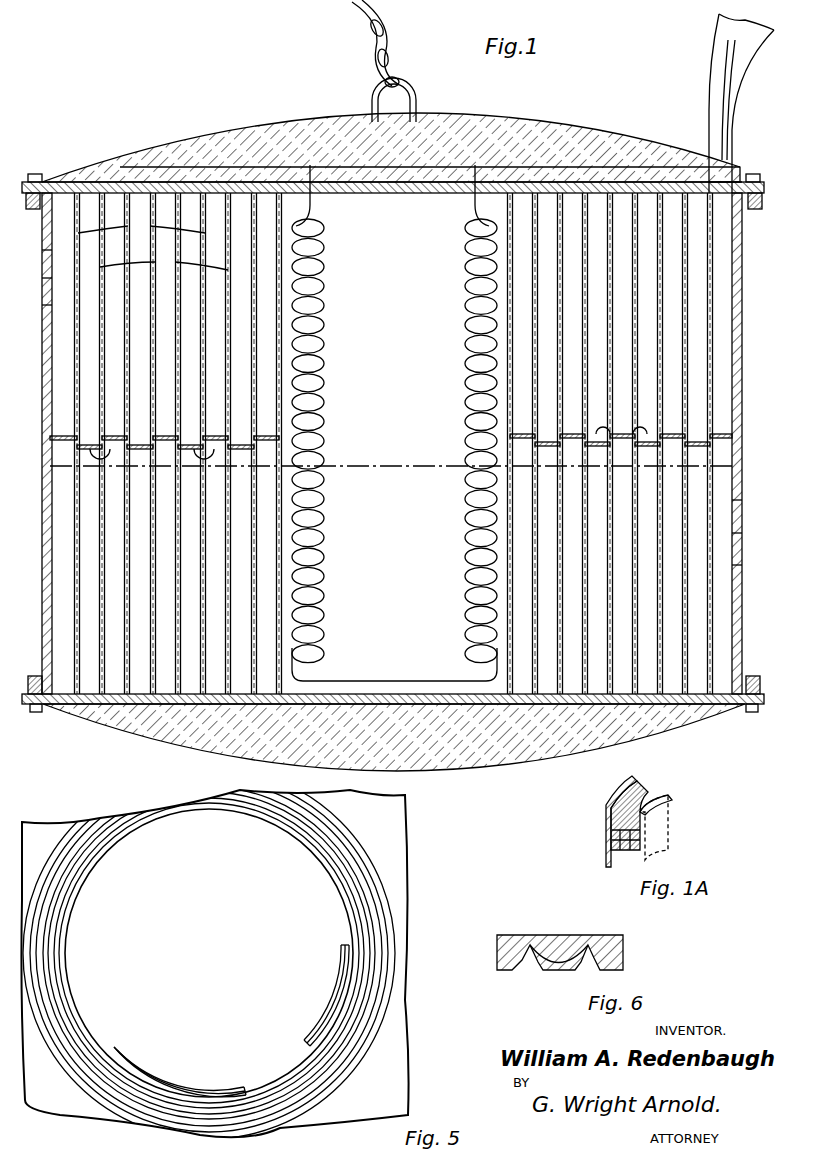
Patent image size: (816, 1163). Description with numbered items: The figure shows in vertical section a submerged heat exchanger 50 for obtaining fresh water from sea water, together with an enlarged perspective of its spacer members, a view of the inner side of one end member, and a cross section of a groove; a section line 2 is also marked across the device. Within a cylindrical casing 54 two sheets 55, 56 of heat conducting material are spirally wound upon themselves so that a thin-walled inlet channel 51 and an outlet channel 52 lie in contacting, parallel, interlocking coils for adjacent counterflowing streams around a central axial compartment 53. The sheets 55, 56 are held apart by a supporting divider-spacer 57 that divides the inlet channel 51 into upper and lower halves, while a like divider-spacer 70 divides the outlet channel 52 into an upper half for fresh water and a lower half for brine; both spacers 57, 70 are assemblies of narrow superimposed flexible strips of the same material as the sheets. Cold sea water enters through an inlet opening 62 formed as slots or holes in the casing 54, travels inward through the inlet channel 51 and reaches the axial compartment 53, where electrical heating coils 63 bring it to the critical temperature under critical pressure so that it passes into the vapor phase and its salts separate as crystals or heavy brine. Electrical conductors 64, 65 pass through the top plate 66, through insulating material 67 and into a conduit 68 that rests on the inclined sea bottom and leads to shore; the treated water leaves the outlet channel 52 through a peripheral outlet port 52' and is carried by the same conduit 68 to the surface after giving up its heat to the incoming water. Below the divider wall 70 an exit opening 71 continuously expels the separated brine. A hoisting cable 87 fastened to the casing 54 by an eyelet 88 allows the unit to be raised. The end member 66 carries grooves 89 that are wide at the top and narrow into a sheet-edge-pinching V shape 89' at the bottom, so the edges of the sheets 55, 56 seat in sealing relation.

In FIG. 1, the section line 2- 2 is at (36, 468).
In FIG. 1, the heat exchanger 50 is at (576, 108).
In FIG. 1, the inlet channel 51 is at (380, 443).
In FIG. 1A, the inlet channel 51 is at (670, 824).
In FIG. 1, the outlet channel 52 is at (403, 443).
In FIG. 1A, the outlet channel 52 is at (599, 821).
In FIG. 1, the outlet port 52' is at (738, 167).
In FIG. 1, the axial compartment 53 is at (398, 279).
In FIG. 1, the casing 54 is at (48, 592).
In FIG. 1, the sheet 55 is at (141, 220).
In FIG. 1, the sheet 56 is at (164, 257).
In FIG. 1, the divider-spacer 57 is at (222, 436).
In FIG. 1, the inlet opening 62 is at (58, 310).
In FIG. 1, the electrical heating coils 63 is at (324, 264).
In FIG. 1, the electrical conductor 64 is at (472, 165).
In FIG. 1, the electrical conductor 65 is at (486, 182).
In FIG. 1, the top plate 66 is at (431, 193).
In FIG. 5, the top plate 66 is at (221, 870).
In FIG. 1, the insulating material 67 is at (226, 138).
In FIG. 1, the conduit 68 is at (710, 58).
In FIG. 1, the divider-spacer 70 is at (100, 452).
In FIG. 1A, the divider-spacer 70 is at (650, 795).
In FIG. 1, the exit opening 71 is at (745, 498).
In FIG. 1, the hoisting cable 87 is at (356, 20).
In FIG. 1, the eyelet 88 is at (371, 98).
In FIG. 5, the groove 89 is at (247, 1012).
In FIG. 6, the groove 89 is at (560, 967).
In FIG. 5, the V shape 89' is at (338, 971).
In FIG. 6, the V shape 89' is at (559, 939).